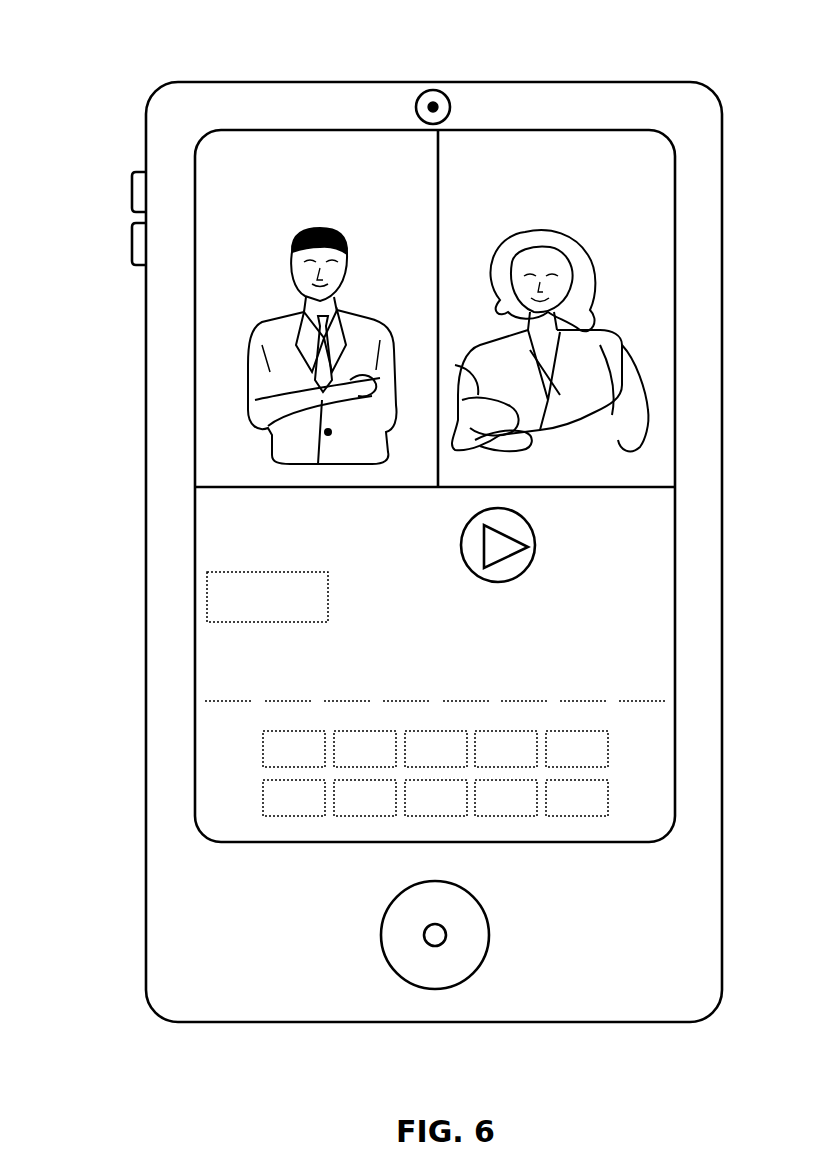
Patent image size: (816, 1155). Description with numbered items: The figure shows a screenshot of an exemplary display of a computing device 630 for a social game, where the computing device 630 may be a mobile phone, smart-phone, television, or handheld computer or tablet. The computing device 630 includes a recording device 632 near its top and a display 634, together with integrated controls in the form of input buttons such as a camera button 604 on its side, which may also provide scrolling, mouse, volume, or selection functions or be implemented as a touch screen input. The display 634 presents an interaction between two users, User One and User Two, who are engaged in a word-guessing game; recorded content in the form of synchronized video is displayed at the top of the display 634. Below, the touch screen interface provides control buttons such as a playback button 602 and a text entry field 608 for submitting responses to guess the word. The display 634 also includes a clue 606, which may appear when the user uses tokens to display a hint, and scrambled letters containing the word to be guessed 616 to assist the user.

The computing device 630 is at (612, 1022).
The recording device 632 is at (433, 82).
The camera button 604 is at (132, 174).
The display 634 is at (435, 486).
The clue 606 is at (267, 584).
The playback button 602 is at (540, 551).
The text entry field 608 is at (638, 688).
The scrambled letters containing the word to be guessed 616 is at (458, 773).